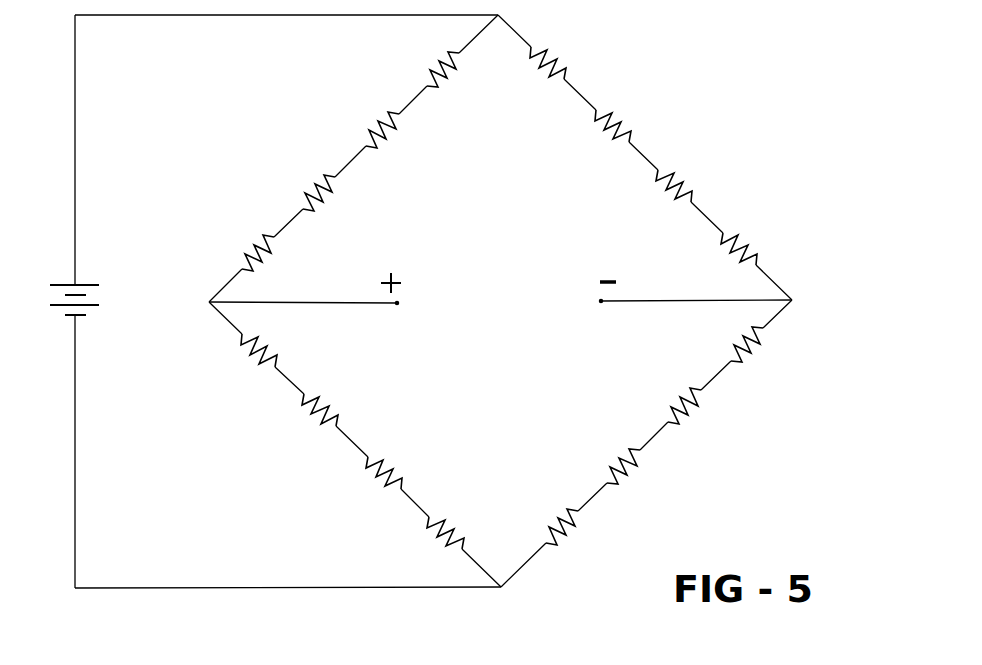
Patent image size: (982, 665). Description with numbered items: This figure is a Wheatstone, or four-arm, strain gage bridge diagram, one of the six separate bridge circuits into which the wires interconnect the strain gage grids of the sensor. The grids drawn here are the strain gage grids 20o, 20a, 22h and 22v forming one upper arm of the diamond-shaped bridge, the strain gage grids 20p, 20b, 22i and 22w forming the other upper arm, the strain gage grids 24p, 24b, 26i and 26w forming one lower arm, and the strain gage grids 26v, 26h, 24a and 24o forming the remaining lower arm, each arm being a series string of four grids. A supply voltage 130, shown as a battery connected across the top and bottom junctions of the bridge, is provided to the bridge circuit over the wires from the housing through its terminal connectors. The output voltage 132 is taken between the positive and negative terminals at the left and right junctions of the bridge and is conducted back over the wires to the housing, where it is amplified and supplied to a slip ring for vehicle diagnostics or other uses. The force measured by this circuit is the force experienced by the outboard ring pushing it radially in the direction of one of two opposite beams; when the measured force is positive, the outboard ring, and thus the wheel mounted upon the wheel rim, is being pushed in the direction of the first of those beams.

The supply voltage 130 is at (63, 285).
The output voltage 132 is at (515, 316).
The strain gage resistor 20o is at (425, 72).
The strain gage resistor 20a is at (380, 122).
The strain gage resistor 20p is at (560, 58).
The strain gage resistor 20b is at (622, 120).
The strain gage resistor 22h is at (313, 184).
The strain gage resistor 22v is at (252, 246).
The strain gage resistor 22i is at (683, 180).
The strain gage resistor 22w is at (752, 247).
The strain gage resistor 24o is at (266, 365).
The strain gage resistor 24a is at (326, 425).
The strain gage resistor 24p is at (755, 342).
The strain gage resistor 24b is at (696, 403).
The strain gage resistor 26h is at (392, 490).
The strain gage resistor 26v is at (452, 548).
The strain gage resistor 26i is at (628, 481).
The strain gage resistor 26w is at (550, 548).